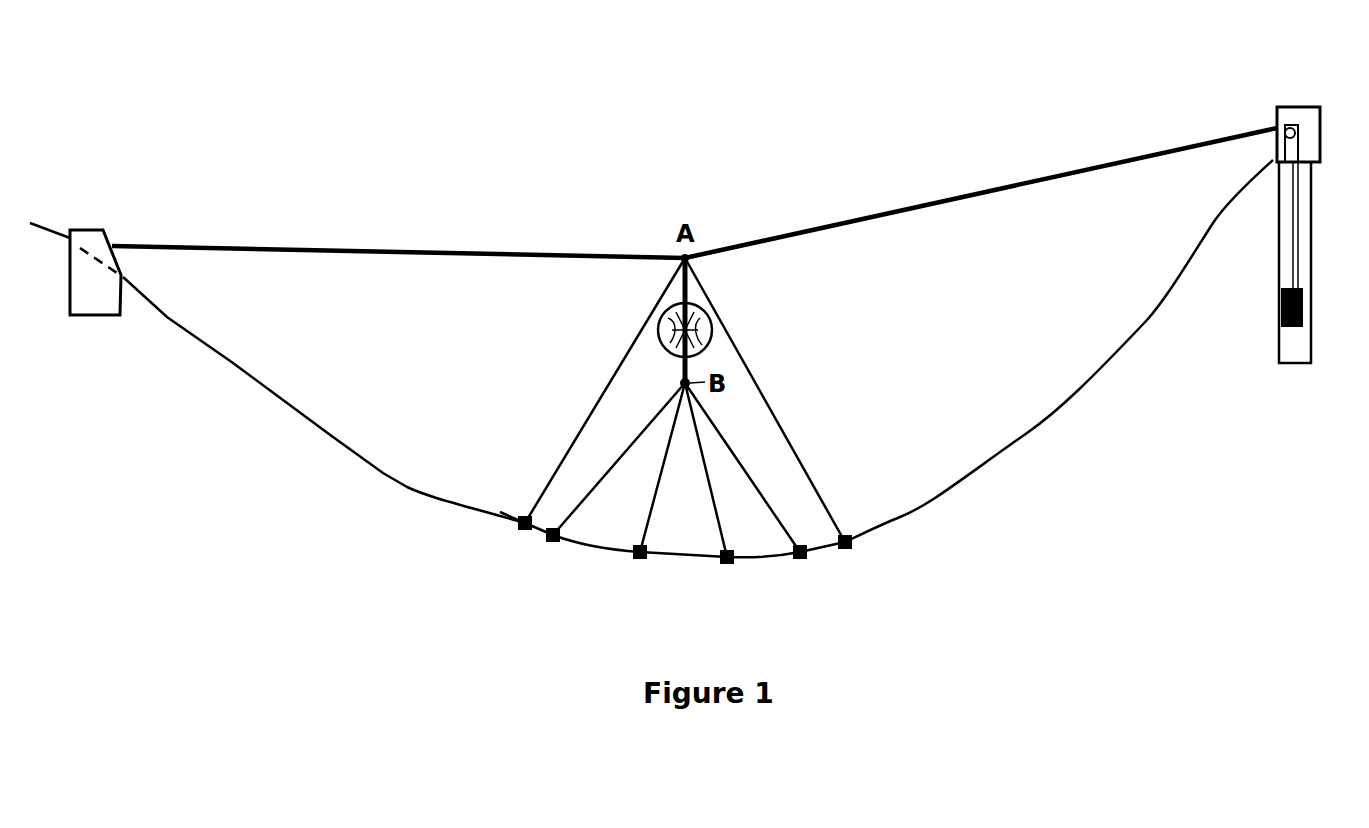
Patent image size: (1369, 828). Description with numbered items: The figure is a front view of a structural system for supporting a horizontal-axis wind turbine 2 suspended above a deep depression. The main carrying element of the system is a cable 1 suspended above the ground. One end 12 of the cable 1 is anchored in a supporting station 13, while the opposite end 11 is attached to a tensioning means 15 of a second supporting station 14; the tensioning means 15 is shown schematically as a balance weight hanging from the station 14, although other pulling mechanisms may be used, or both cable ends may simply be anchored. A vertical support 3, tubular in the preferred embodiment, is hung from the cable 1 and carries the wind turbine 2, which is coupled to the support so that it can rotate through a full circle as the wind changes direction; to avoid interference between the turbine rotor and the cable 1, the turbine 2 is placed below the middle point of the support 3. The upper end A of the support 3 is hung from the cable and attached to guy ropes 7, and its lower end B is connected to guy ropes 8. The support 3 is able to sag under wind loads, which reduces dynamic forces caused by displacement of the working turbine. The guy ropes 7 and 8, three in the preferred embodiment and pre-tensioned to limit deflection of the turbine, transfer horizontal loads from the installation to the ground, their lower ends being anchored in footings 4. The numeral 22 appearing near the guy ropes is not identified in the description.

The cable 1 is at (937, 200).
The horizontal-axis wind turbine 2 is at (712, 318).
The vertical support 3 is at (693, 281).
The footings 4 is at (801, 557).
The guy ropes 7 is at (770, 405).
The guy ropes 8 is at (599, 483).
The end of cable 11 is at (1277, 128).
The end of cable 12 is at (112, 244).
The supporting station 13 is at (85, 278).
The supporting station 14 is at (1357, 112).
The tensioning means (balance weight) 15 is at (1312, 298).
The guy line 22 is at (648, 343).